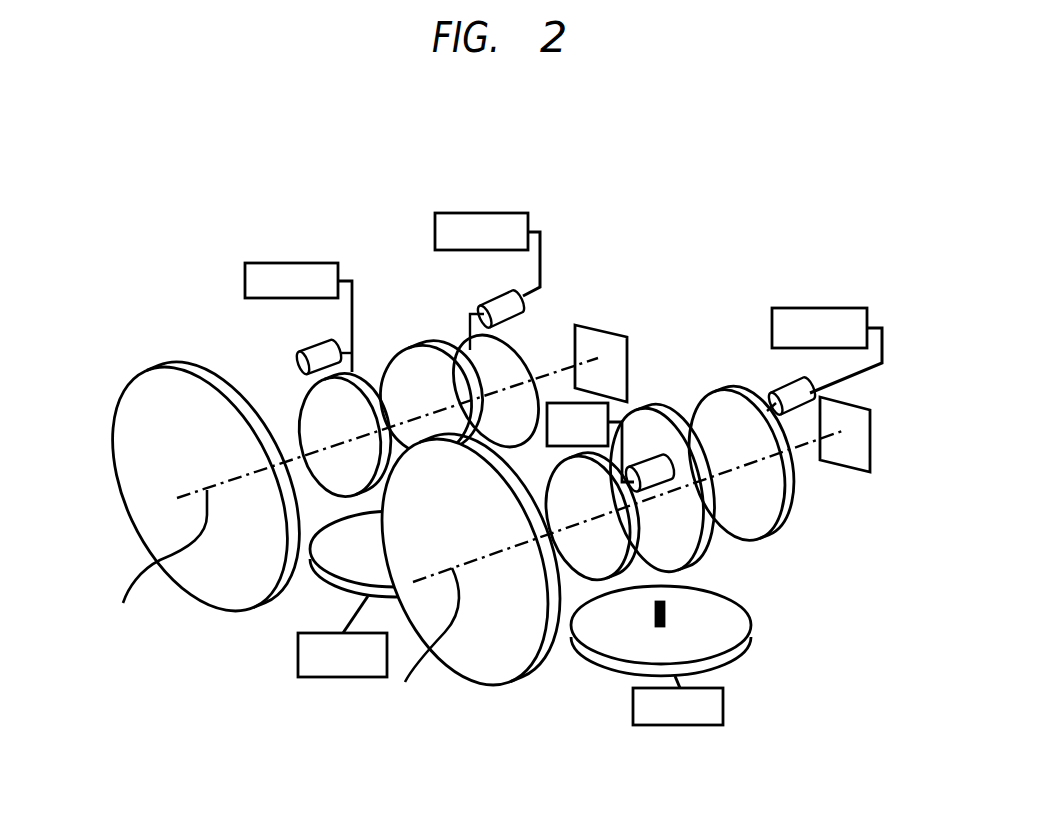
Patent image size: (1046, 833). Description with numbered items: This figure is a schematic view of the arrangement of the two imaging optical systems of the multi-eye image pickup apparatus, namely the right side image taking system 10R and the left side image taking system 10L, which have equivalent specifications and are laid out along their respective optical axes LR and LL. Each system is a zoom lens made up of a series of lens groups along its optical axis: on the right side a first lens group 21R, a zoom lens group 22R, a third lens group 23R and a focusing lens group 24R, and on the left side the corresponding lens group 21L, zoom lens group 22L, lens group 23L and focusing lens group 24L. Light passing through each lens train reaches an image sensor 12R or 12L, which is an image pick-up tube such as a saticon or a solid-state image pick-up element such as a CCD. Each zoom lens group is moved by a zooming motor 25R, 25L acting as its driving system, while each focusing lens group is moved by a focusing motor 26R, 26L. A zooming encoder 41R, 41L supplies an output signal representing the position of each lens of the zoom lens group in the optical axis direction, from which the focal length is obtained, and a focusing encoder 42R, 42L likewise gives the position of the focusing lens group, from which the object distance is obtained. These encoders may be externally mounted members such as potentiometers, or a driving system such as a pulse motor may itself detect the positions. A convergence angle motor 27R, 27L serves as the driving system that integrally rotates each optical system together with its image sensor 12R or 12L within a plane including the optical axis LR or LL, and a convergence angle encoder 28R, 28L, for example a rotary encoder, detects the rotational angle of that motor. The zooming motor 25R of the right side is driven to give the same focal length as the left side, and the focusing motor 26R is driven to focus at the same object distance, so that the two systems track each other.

The right side image taking system 10R is at (368, 218).
The left side image taking system 10L is at (522, 695).
The lens group 21R is at (133, 402).
The lens group 21L is at (462, 660).
The zoom lens group 22R is at (301, 405).
The zoom lens group 22L is at (577, 563).
The lens group 23R is at (395, 365).
The lens group 23L is at (672, 418).
The focusing lens group 24R is at (475, 350).
The focusing lens group 24L is at (763, 522).
The zooming motor 25R is at (310, 350).
The zooming motor 25L is at (652, 458).
The focusing motor 26R is at (494, 296).
The focusing motor 26L is at (788, 387).
The convergence angle motor 27R is at (296, 577).
The convergence angle motor 27L is at (717, 635).
The convergence angle encoder 28R is at (335, 665).
The convergence angle encoder 28L is at (703, 720).
The zooming encoder 41R is at (263, 268).
The zooming encoder 41L is at (573, 420).
The focusing encoder 42R is at (462, 218).
The focusing encoder 42L is at (792, 318).
The right side image sensor 12R is at (613, 340).
The left side image sensor 12L is at (860, 453).
The optical axis LR is at (158, 561).
The optical axis LL is at (428, 640).